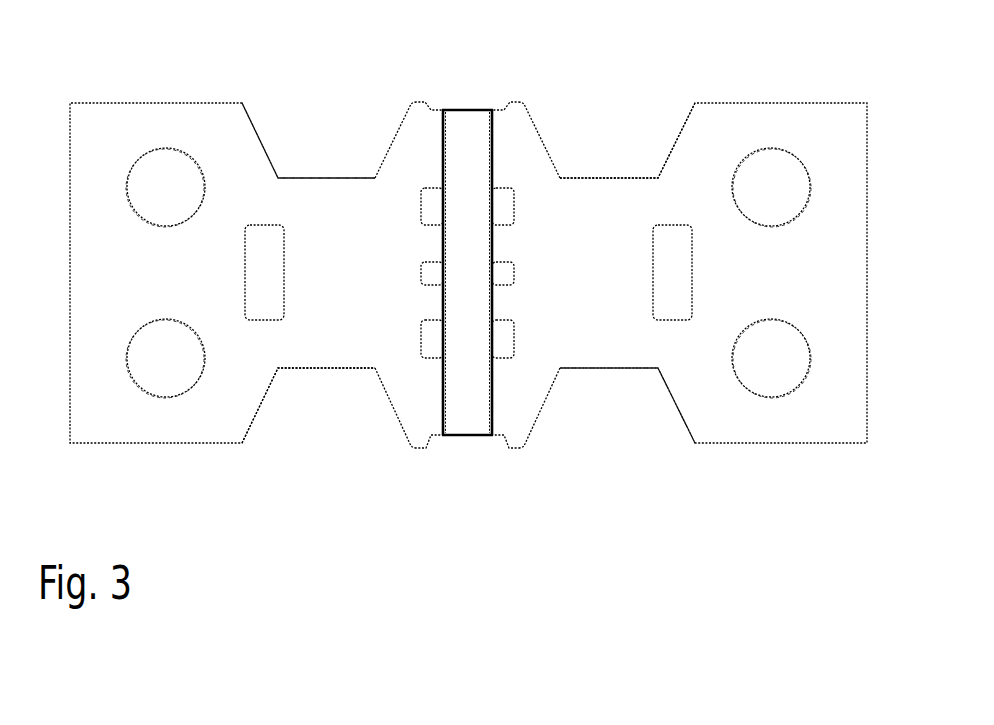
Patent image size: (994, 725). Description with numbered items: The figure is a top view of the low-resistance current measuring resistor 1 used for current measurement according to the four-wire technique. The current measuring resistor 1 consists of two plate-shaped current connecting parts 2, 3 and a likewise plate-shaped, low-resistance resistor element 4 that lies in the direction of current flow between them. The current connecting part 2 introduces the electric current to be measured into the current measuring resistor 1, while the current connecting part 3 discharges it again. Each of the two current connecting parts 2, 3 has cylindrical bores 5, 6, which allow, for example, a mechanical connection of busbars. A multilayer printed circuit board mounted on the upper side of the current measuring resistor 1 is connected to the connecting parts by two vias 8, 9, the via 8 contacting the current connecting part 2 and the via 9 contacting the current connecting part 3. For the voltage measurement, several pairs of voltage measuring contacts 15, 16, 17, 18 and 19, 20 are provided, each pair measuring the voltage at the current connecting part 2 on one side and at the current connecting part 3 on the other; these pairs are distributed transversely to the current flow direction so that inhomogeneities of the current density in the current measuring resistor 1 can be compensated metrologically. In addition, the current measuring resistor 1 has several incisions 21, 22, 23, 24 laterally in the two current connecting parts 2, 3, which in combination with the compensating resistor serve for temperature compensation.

The current measuring resistor 1 is at (585, 507).
The current connecting part 2 is at (97, 417).
The current connecting part 3 is at (832, 420).
The resistor element 4 is at (463, 125).
The cylindrical bore 5 is at (166, 178).
The cylindrical bore 6 is at (781, 178).
The via 8 is at (260, 276).
The via 9 is at (676, 276).
The voltage measuring contact 15 is at (432, 200).
The voltage measuring contact 16 is at (504, 200).
The voltage measuring contact 17 is at (432, 272).
The voltage measuring contact 18 is at (503, 272).
The voltage measuring contact 19 is at (437, 348).
The voltage measuring contact 20 is at (499, 348).
The incision 21 is at (318, 135).
The incision 22 is at (304, 397).
The incision 23 is at (647, 140).
The incision 24 is at (653, 412).